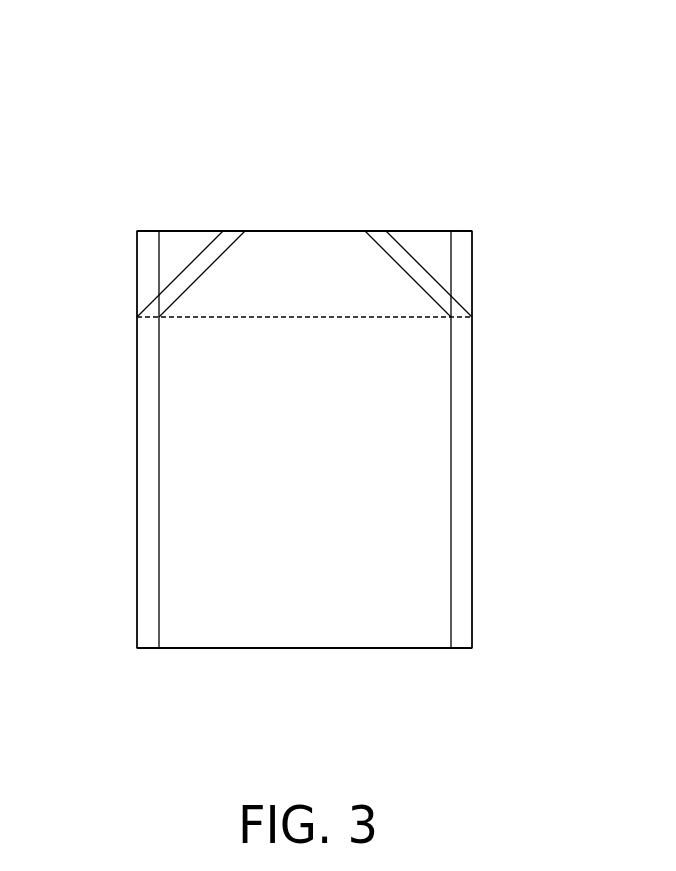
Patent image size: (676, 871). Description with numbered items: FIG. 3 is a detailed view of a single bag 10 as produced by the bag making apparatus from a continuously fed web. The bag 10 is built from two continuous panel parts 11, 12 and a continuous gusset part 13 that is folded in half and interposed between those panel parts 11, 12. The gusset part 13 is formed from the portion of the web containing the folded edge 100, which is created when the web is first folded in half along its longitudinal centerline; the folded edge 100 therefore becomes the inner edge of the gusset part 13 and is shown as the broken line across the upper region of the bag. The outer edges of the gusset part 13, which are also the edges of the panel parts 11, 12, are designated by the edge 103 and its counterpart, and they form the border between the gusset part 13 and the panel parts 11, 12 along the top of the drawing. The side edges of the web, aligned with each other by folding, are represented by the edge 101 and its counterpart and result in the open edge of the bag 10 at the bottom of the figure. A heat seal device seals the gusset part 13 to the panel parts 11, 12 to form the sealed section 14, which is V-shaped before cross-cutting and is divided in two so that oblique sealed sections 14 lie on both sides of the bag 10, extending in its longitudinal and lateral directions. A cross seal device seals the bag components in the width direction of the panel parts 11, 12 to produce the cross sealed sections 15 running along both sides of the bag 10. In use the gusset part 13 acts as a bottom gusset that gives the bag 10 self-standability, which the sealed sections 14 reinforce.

The bag 10 is at (450, 108).
The panel part 11 is at (402, 403).
The panel part 12 is at (402, 450).
The gusset part 13 is at (322, 231).
The sealed section 14 is at (185, 275).
The cross sealed section 15 is at (147, 528).
The folded edge 100 is at (217, 320).
The side edge 101 is at (318, 648).
The edge of panel part 103 is at (193, 231).